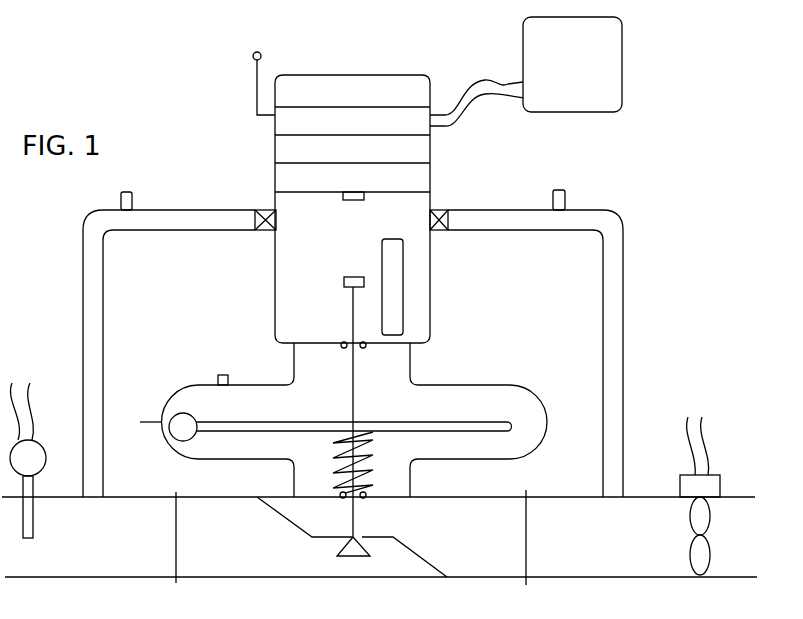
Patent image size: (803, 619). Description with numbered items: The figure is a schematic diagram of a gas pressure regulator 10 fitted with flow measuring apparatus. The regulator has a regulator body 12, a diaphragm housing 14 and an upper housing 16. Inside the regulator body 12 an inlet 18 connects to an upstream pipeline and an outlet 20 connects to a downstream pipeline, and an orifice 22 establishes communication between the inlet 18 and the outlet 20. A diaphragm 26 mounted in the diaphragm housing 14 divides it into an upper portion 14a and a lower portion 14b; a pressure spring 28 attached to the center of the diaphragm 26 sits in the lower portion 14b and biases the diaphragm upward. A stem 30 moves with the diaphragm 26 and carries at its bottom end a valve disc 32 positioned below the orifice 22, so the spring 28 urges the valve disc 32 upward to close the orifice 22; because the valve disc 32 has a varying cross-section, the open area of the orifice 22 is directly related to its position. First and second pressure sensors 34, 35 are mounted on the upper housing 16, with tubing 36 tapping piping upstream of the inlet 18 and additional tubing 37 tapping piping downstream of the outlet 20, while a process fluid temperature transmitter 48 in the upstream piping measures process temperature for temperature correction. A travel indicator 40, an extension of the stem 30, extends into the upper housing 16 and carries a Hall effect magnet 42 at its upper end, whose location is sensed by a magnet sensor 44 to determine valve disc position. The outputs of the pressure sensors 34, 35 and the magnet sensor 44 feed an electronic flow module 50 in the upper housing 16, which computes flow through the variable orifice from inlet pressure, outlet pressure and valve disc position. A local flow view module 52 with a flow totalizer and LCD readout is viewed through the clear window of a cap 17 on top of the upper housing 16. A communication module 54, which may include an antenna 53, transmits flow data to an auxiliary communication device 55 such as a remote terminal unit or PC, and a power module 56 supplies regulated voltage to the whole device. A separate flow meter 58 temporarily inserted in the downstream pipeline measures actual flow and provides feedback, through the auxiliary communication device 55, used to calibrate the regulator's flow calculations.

The regulator 10 is at (463, 363).
The regulator body 12 is at (492, 495).
The diaphragm housing 14 is at (170, 392).
The upper portion of the diaphragm housing 14a is at (178, 411).
The lower portion of the diaphragm housing 14b is at (200, 455).
The upper housing 16 is at (276, 271).
The cap 17 is at (332, 75).
The inlet 18 is at (176, 553).
The outlet 20 is at (527, 545).
The orifice 22 is at (362, 535).
The diaphragm 26 is at (457, 423).
The pressure spring 28 is at (333, 452).
The stem 30 is at (352, 519).
The valve disc 32 is at (342, 555).
The first pressure sensor 34 is at (267, 210).
The second pressure sensor 35 is at (440, 232).
The tubing 36 is at (90, 270).
The additional tubing 37 is at (623, 306).
The travel indicator 40 is at (355, 402).
The Hall effect magnet 42 is at (352, 277).
The magnet sensor 44 is at (395, 288).
The process fluid temperature transmitter 48 is at (45, 460).
The electronic flow module 50 is at (425, 178).
The local flow view module 52 is at (424, 150).
The antenna 53 is at (255, 92).
The communication module 54 is at (283, 122).
The auxiliary communication device 55 is at (596, 107).
The power module 56 is at (392, 82).
The flow meter 58 is at (712, 482).